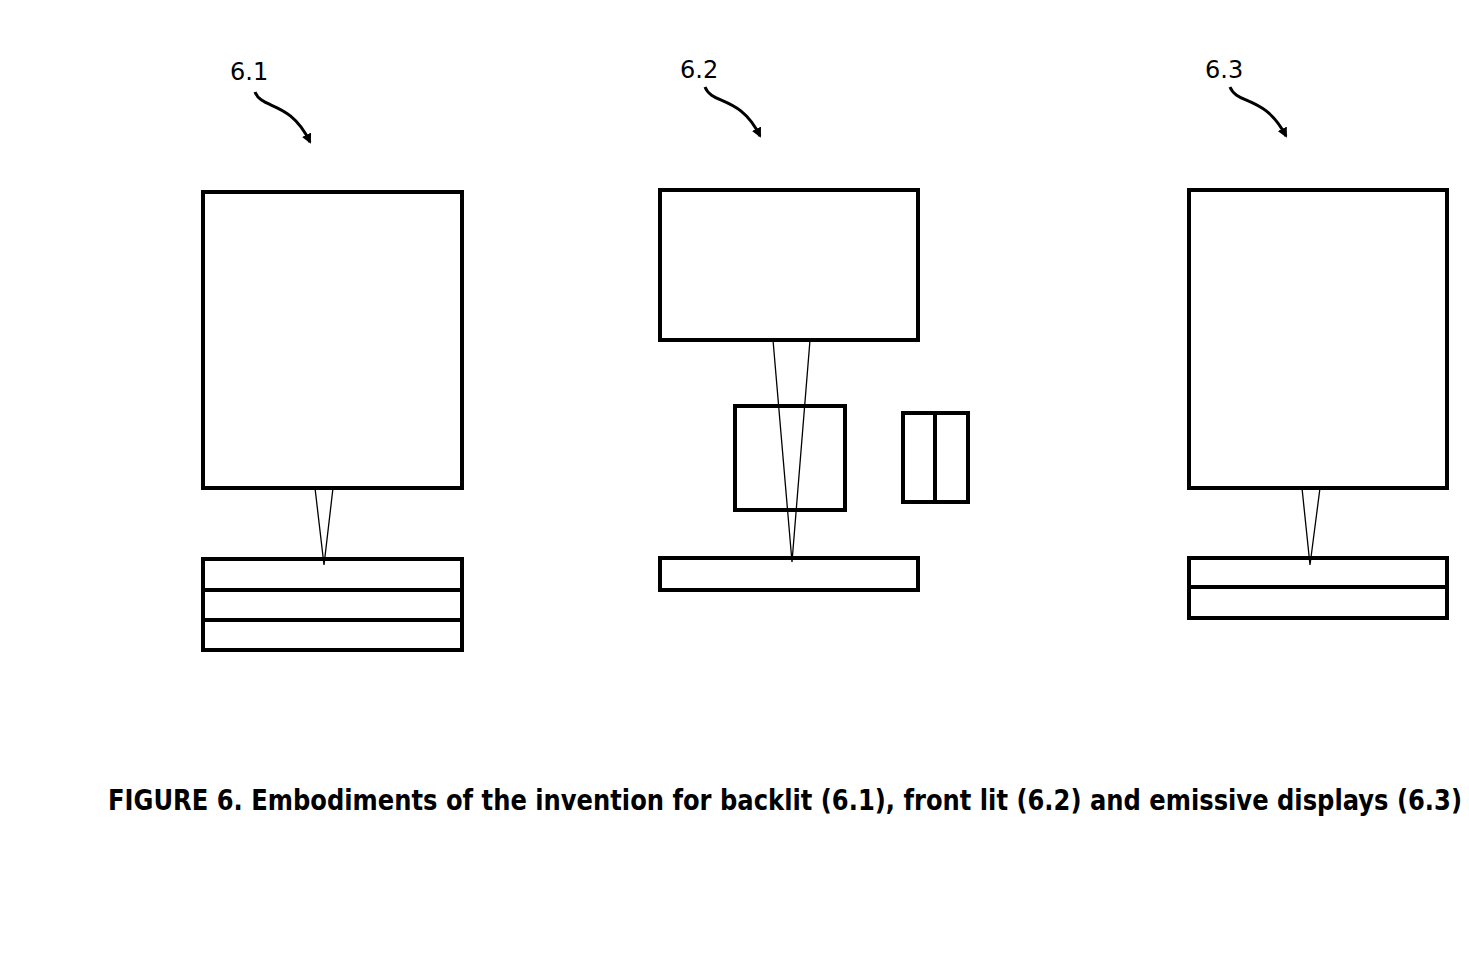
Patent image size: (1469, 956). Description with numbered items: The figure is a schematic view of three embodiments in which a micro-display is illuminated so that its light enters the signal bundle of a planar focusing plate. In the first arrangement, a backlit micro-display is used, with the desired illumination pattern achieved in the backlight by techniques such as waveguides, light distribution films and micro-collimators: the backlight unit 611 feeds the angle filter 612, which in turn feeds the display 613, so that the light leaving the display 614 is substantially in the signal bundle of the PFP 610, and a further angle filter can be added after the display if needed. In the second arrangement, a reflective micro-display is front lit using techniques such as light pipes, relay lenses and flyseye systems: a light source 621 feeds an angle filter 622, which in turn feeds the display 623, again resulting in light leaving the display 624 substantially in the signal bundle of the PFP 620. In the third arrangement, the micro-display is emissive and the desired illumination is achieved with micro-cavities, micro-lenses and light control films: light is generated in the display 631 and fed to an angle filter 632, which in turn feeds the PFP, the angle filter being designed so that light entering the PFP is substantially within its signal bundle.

The PFP 610 is at (292, 340).
The backlight unit 611 is at (292, 642).
The angle filter 612 is at (292, 607).
The display 613 is at (292, 573).
The light leaving the display 614 is at (227, 526).
The PFP 620 is at (749, 265).
The light source 621 is at (978, 477).
The angle filter 622 is at (921, 477).
The display 623 is at (749, 572).
The light leaving the display 624 is at (718, 451).
The display 631 is at (1277, 605).
The angle filter 632 is at (1277, 571).